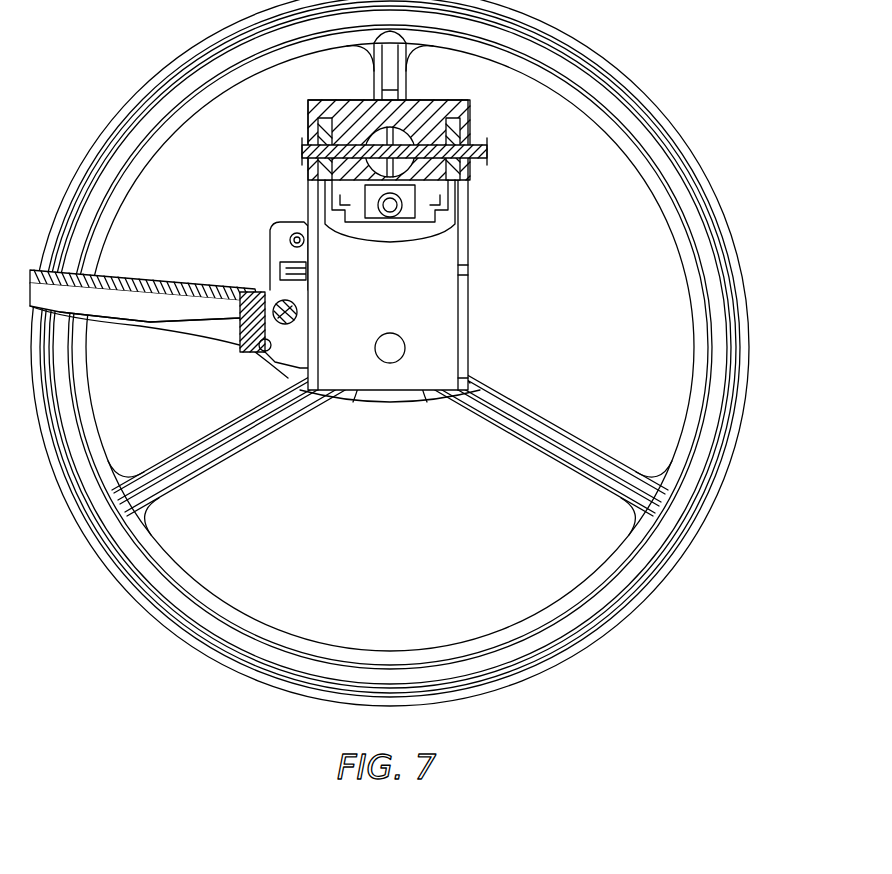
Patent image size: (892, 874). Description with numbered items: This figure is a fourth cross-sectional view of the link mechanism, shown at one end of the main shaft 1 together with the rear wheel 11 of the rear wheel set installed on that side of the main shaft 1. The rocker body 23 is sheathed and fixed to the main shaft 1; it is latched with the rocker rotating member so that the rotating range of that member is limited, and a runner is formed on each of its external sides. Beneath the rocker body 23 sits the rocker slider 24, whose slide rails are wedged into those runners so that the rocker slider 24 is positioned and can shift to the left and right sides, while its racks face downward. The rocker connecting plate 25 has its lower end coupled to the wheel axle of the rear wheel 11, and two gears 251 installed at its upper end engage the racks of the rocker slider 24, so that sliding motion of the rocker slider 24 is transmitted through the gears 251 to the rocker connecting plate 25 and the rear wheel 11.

The main shaft 1 is at (406, 251).
The rear wheel 11 is at (715, 401).
The rocker body 23 is at (455, 106).
The rocker slider 24 is at (440, 222).
The rocker connecting plate 25 is at (465, 193).
The gear 251 is at (447, 168).